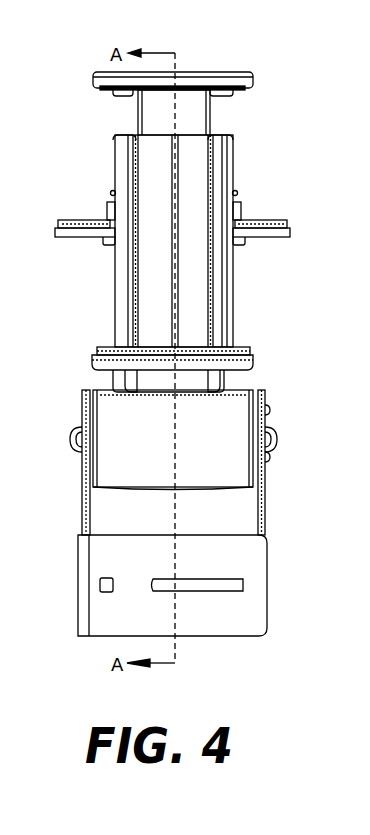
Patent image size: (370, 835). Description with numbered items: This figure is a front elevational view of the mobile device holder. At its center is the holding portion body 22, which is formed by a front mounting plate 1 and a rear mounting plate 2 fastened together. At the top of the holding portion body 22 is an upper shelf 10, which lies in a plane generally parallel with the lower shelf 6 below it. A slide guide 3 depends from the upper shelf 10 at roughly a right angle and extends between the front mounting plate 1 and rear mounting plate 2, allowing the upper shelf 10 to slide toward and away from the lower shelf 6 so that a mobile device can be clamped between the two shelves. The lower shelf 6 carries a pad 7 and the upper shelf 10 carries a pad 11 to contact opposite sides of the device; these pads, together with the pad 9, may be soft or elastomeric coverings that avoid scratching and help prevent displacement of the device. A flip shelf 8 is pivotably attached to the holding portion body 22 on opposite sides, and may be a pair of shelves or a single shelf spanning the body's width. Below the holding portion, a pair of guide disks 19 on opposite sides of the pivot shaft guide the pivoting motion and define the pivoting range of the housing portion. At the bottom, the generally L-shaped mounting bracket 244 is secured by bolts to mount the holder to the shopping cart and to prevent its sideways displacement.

The front mounting plate 1 is at (118, 435).
The rear mounting plate 2 is at (88, 515).
The slide guide 3 is at (210, 110).
The lower shelf 6 is at (255, 368).
The pad 7 is at (253, 350).
The flip shelf 8 is at (80, 238).
The pad 9 is at (73, 228).
The upper shelf 10 is at (222, 80).
The pad 11 is at (253, 86).
The guide disk 19 is at (90, 460).
The holding portion body 22 is at (203, 190).
The mounting bracket 244 is at (103, 613).